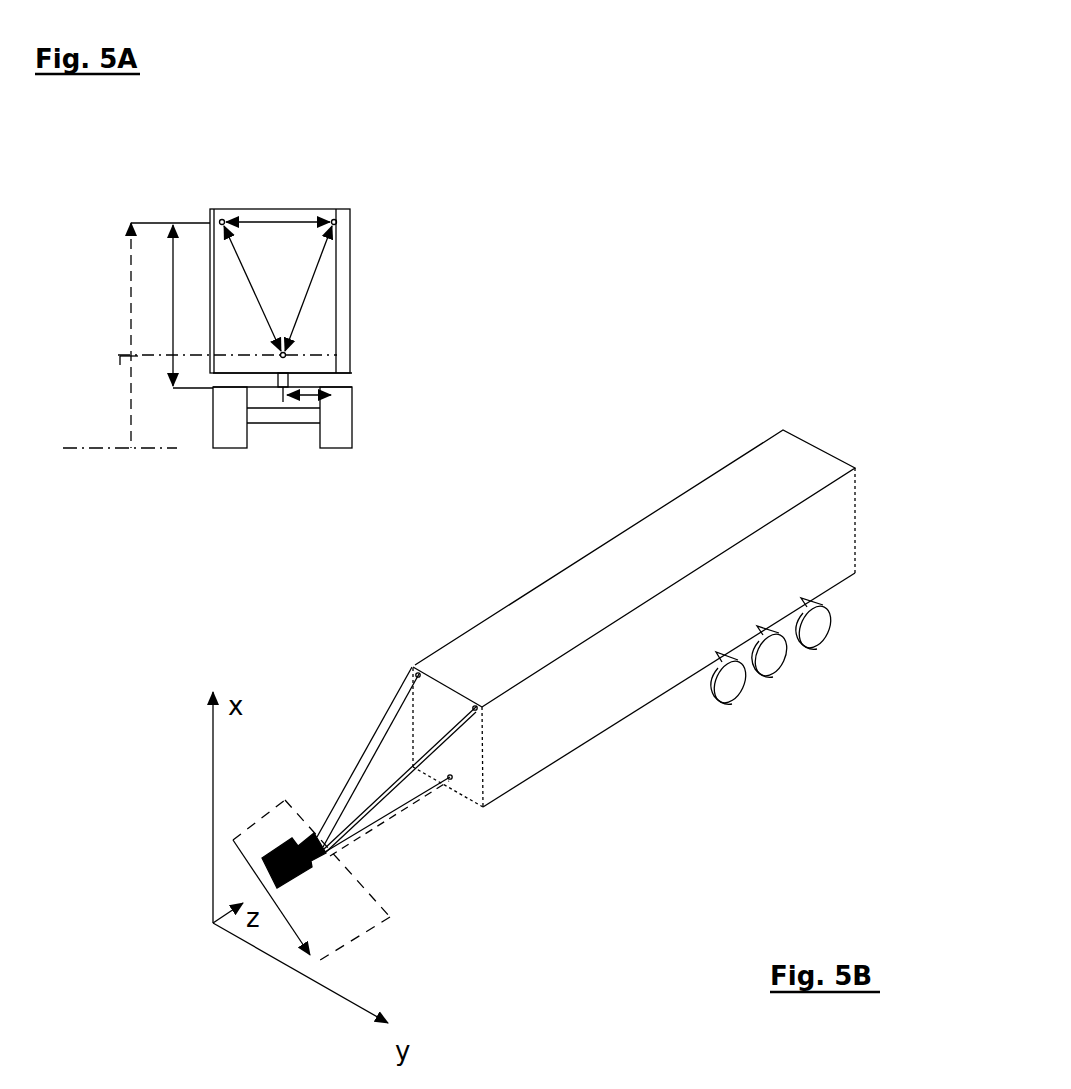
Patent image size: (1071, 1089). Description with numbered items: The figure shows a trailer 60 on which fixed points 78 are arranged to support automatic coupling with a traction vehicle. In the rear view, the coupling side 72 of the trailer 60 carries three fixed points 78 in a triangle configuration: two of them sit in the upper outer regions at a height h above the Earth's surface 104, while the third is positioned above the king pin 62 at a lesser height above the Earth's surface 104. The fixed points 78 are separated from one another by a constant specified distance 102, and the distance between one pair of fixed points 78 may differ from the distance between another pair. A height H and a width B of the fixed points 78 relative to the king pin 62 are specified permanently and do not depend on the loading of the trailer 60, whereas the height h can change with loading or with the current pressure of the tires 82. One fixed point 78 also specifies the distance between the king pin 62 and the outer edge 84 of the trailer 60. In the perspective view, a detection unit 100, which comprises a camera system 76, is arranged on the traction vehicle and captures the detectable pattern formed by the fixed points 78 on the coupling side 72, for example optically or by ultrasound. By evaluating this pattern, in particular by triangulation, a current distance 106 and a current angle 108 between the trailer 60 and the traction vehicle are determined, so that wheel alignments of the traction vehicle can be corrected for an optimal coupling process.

In FIG. 5A, the trailer 60 is at (352, 263).
In FIG. 5B, the trailer 60 is at (818, 447).
In FIG. 5A, the king pin 62 is at (283, 402).
In FIG. 5A, the coupling side 72 is at (343, 235).
In FIG. 5B, the coupling side 72 is at (477, 757).
In FIG. 5B, the camera system 76 is at (290, 883).
In FIG. 5A, the fixed points 78 is at (218, 212).
In FIG. 5B, the fixed points 78 is at (413, 667).
In FIG. 5A, the tires 82 is at (213, 442).
In FIG. 5B, the tires 82 is at (833, 617).
In FIG. 5A, the outer edge 84 is at (352, 373).
In FIG. 5B, the detection unit 100 is at (377, 927).
In FIG. 5A, the constant specified distance 102 is at (277, 210).
In FIG. 5A, the Earth's surface 104 is at (106, 452).
In FIG. 5B, the current distance 106 is at (407, 812).
In FIG. 5B, the current angle 108 is at (422, 768).
In FIG. 5A, the height H is at (172, 313).
In FIG. 5A, the height h is at (150, 225).
In FIG. 5A, the width B is at (320, 420).